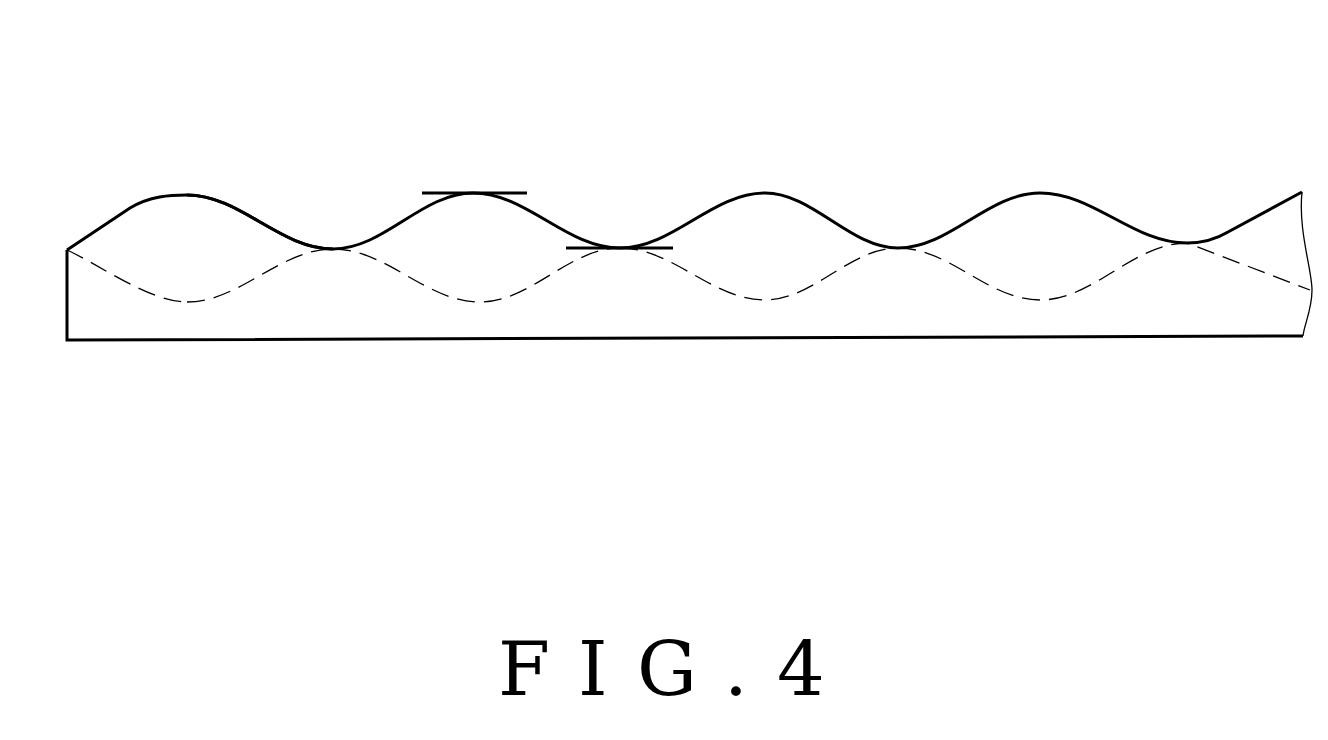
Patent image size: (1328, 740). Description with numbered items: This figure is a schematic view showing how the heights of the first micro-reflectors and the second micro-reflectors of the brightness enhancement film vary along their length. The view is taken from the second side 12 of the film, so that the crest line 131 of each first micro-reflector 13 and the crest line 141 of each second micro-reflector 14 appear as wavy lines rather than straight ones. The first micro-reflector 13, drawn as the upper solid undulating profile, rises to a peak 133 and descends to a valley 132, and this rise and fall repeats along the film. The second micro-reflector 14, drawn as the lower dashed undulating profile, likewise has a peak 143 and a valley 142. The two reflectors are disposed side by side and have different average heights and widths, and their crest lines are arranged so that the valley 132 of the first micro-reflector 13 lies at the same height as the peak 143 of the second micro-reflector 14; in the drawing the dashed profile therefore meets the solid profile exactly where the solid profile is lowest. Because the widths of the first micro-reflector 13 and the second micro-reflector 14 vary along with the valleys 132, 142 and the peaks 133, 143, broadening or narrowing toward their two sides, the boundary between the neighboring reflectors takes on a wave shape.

The second side 12 is at (930, 337).
The first micro-reflector 13 is at (160, 232).
The crest line of first micro-reflector 131 is at (260, 213).
The valley of first micro-reflector 132 is at (620, 248).
The peak of first micro-reflector 133 is at (488, 194).
The second micro-reflector 14 is at (103, 307).
The crest line of second micro-reflector 141 is at (268, 277).
The valley of second micro-reflector 142 is at (473, 303).
The peak of second micro-reflector 143 is at (620, 248).